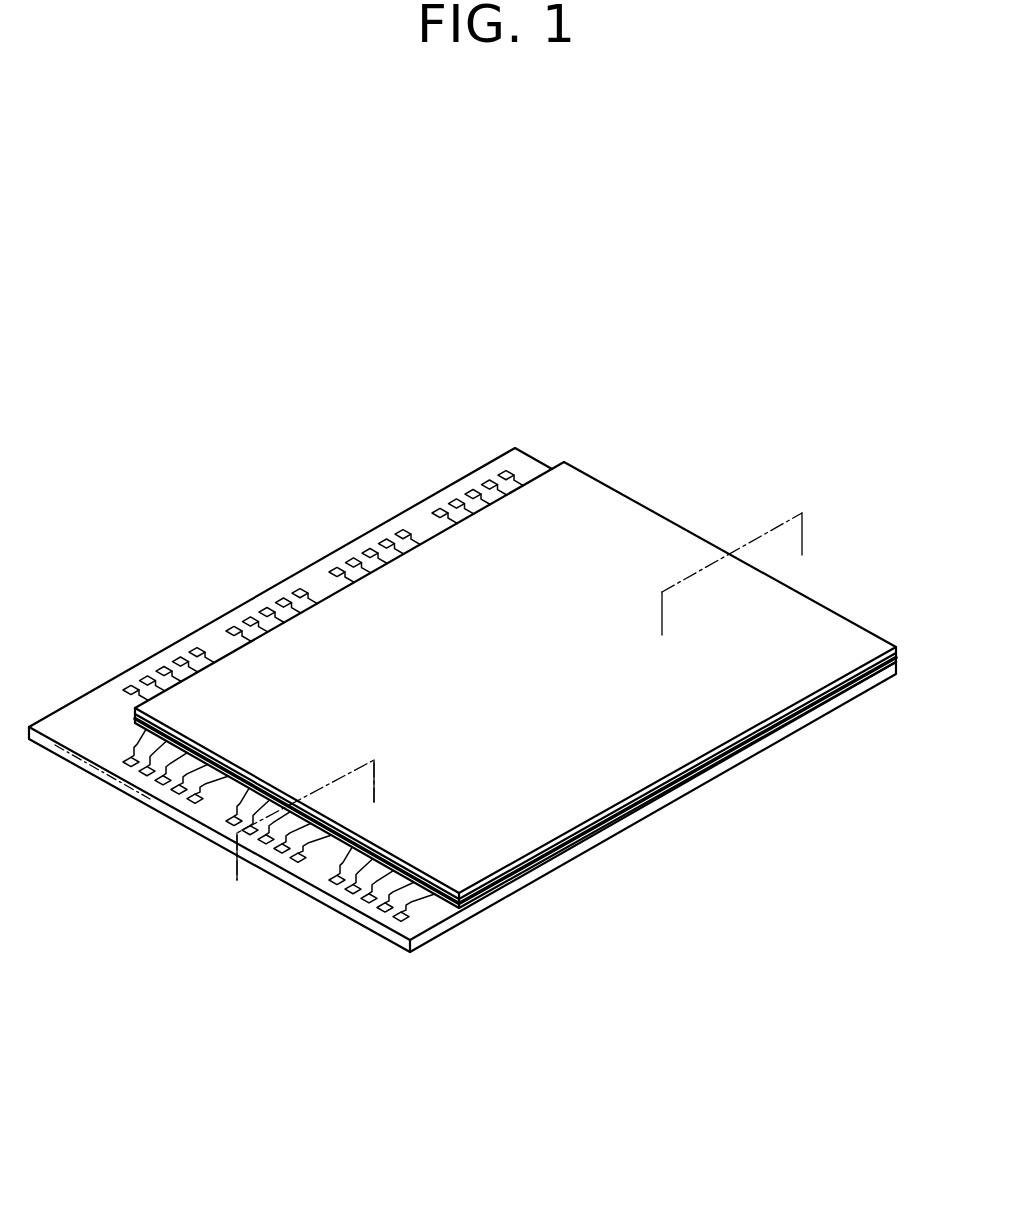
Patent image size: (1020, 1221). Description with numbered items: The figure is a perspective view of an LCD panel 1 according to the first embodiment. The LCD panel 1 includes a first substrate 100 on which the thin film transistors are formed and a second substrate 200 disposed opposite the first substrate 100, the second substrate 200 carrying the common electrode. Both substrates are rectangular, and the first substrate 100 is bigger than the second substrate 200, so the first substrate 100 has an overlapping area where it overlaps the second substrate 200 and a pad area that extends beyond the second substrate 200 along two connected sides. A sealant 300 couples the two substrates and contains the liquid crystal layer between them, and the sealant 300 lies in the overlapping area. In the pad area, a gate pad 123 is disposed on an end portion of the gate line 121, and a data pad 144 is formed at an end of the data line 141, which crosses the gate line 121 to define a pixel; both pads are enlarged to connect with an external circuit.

The LCD panel 1 is at (462, 689).
The first substrate 100 is at (533, 456).
The second substrate 200 is at (628, 494).
The sealant 300 is at (718, 759).
The data line 141 is at (430, 520).
The data pad 144 is at (442, 514).
The gate line 121 is at (423, 907).
The gate pad 123 is at (413, 952).